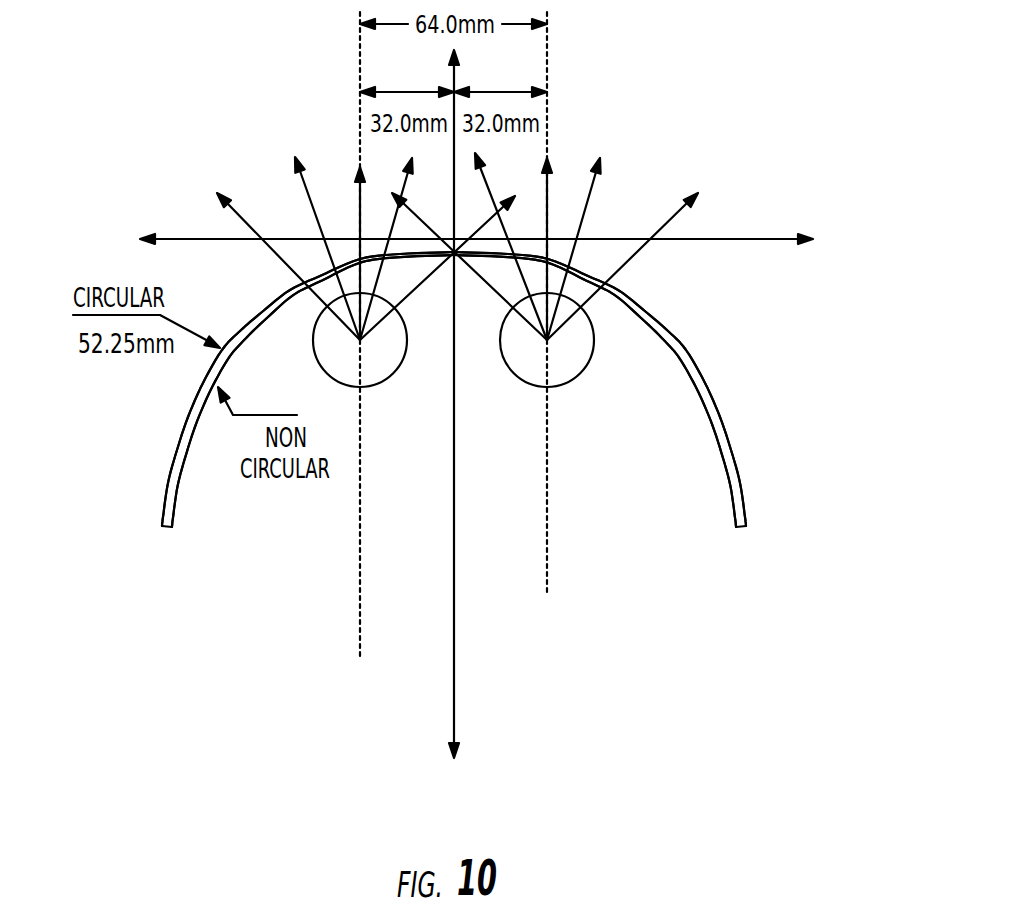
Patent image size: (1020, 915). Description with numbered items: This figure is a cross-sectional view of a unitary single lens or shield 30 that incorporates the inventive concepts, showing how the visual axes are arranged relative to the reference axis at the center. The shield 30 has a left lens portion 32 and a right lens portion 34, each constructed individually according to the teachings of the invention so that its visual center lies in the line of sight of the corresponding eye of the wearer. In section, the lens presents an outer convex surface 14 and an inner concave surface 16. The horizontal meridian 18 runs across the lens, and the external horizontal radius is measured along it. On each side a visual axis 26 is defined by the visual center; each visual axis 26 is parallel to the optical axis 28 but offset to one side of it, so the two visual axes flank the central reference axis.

The outer convex surface 14 is at (180, 427).
The inner concave surface 16 is at (182, 468).
The horizontal meridian 18 is at (780, 235).
The visual axis 26 is at (360, 648).
The optical axis 28 is at (455, 710).
The unitary single lens or shield 30 is at (670, 304).
The left lens portion 32 is at (687, 348).
The right lens portion 34 is at (253, 318).